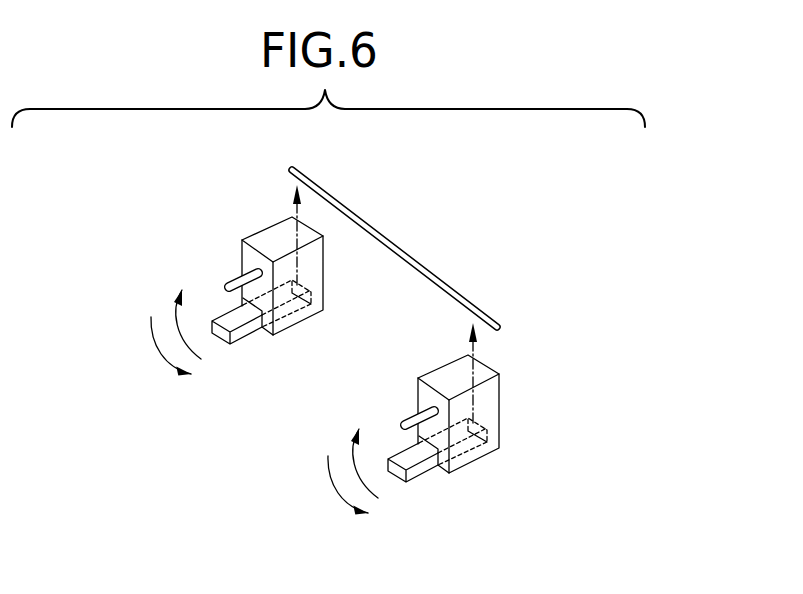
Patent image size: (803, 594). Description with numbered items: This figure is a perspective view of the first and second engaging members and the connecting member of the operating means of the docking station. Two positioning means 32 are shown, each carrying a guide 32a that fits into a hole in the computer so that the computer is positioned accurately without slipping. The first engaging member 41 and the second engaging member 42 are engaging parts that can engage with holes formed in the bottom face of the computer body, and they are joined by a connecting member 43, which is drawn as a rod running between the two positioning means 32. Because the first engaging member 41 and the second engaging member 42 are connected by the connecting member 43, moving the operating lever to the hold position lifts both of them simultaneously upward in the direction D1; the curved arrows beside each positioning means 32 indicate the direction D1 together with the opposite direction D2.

The positioning means 32 is at (240, 210).
The guide 32a is at (226, 283).
The first engaging member 41 is at (431, 481).
The second engaging member 42 is at (255, 343).
The connecting member 43 is at (413, 250).
The direction D1 is at (199, 358).
The second direction D2 is at (150, 335).